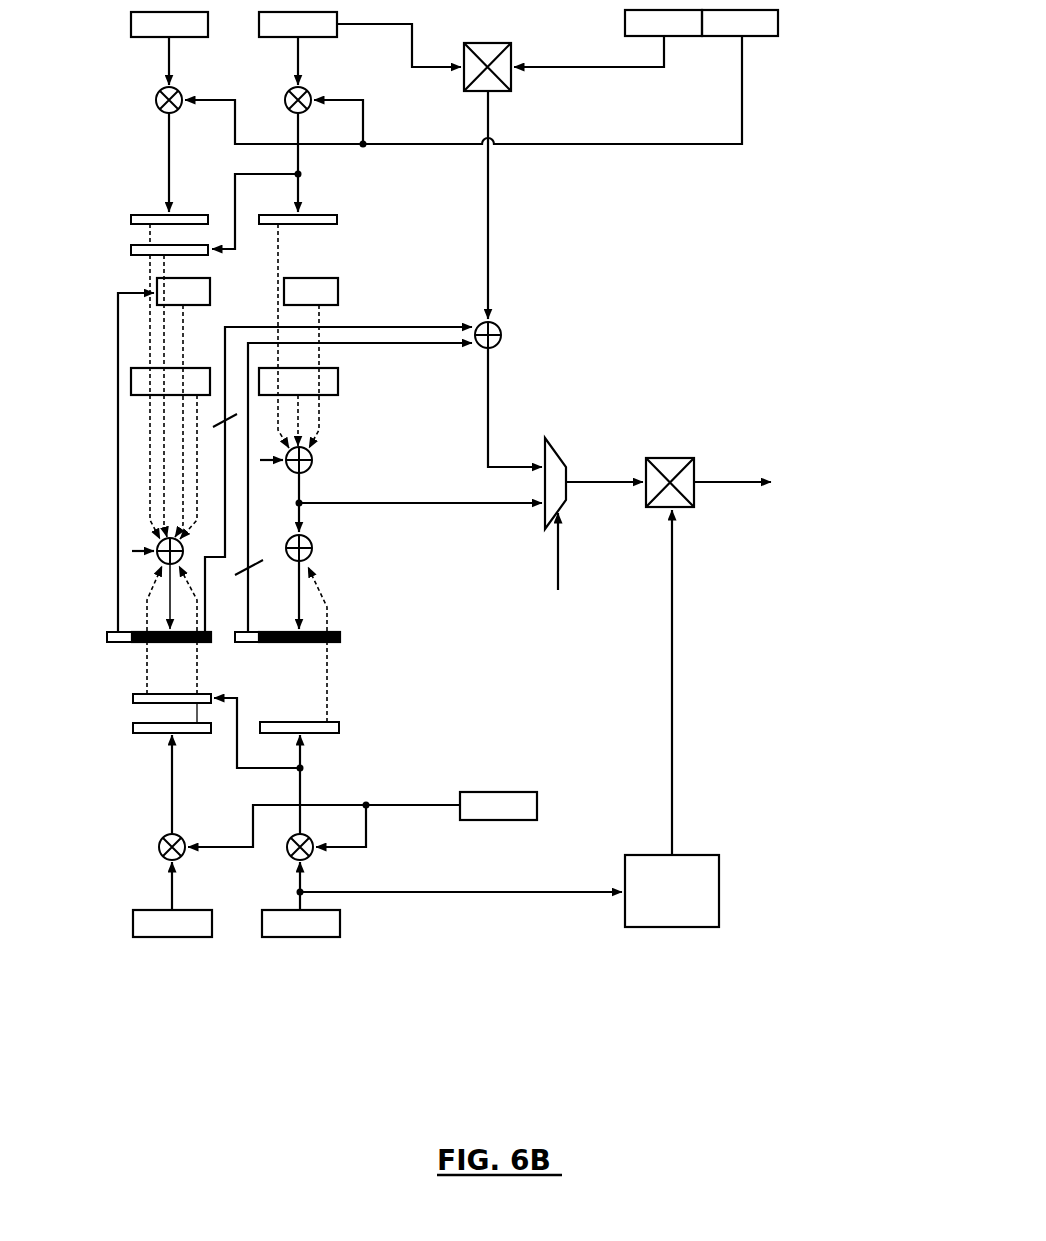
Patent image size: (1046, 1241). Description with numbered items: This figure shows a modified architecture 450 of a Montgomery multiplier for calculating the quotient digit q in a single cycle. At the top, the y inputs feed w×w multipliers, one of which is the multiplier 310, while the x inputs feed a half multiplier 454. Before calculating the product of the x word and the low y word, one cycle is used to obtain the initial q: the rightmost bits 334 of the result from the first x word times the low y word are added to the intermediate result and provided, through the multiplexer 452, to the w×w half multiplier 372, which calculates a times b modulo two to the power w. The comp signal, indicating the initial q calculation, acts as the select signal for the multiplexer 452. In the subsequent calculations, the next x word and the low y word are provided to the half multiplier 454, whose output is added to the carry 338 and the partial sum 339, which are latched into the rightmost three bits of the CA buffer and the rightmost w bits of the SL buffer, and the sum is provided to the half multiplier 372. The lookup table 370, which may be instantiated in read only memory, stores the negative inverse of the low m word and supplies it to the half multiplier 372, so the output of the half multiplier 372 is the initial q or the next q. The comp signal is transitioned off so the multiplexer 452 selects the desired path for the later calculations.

The w×w multiplier 310 is at (309, 91).
The rightmost w bits 334 is at (337, 220).
The carry 338 is at (249, 642).
The partial sum 339 is at (172, 642).
The lookup table 370 is at (720, 870).
The w×w half multiplier 372 is at (695, 468).
The modified architecture 450 is at (104, 985).
The multiplexer 452 is at (560, 450).
The half multiplier 454 is at (488, 43).